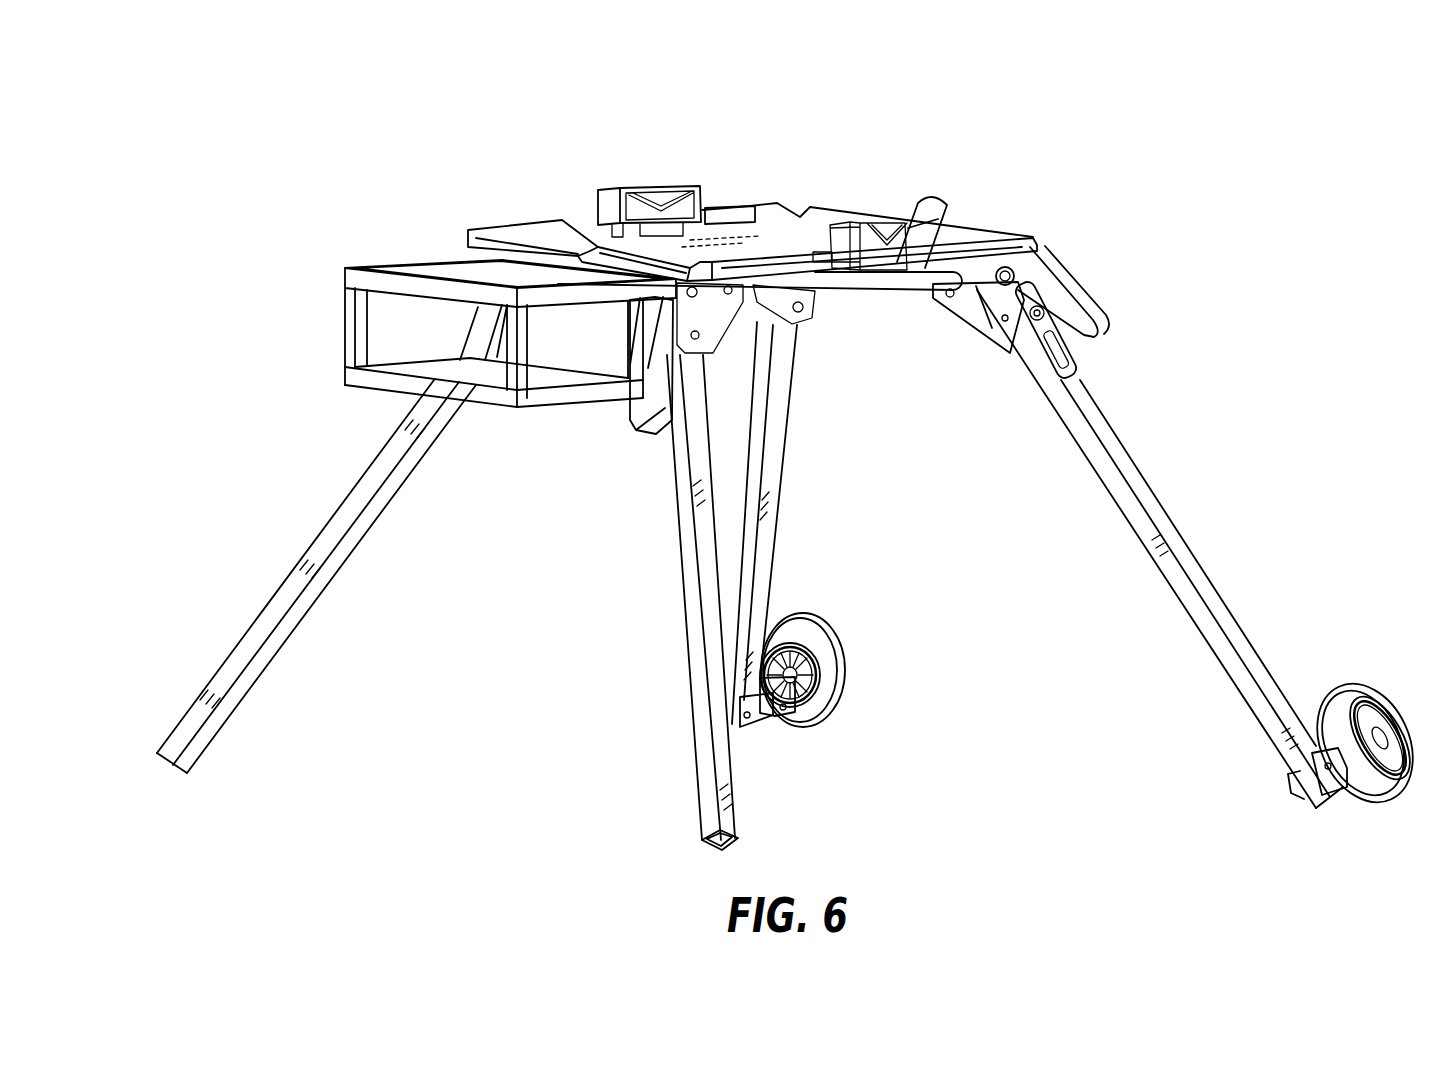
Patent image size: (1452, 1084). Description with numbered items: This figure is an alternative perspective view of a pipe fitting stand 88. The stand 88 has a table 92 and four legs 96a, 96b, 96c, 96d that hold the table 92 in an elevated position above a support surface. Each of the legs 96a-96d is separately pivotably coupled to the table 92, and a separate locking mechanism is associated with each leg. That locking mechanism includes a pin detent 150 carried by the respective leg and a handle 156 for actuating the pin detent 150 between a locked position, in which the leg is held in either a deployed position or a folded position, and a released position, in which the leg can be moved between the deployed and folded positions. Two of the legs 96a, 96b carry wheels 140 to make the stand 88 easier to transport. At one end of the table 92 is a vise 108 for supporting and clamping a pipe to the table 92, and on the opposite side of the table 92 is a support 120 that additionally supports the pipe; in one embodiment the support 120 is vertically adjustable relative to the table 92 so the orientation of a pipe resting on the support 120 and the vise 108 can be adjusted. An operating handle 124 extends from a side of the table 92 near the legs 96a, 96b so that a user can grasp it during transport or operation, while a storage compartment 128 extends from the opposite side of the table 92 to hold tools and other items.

The pipe fitting stand 88 is at (529, 130).
The table 92 is at (742, 248).
The leg 96a is at (1185, 559).
The leg 96b is at (760, 548).
The leg 96c is at (693, 603).
The leg 96d is at (273, 620).
The vise 108 is at (970, 205).
The support 120 is at (667, 195).
The operating handle 124 is at (1058, 275).
The storage compartment 128 is at (388, 262).
The wheel 140 is at (840, 669).
The pin detent 150 is at (1043, 308).
The handle 156 is at (1043, 348).